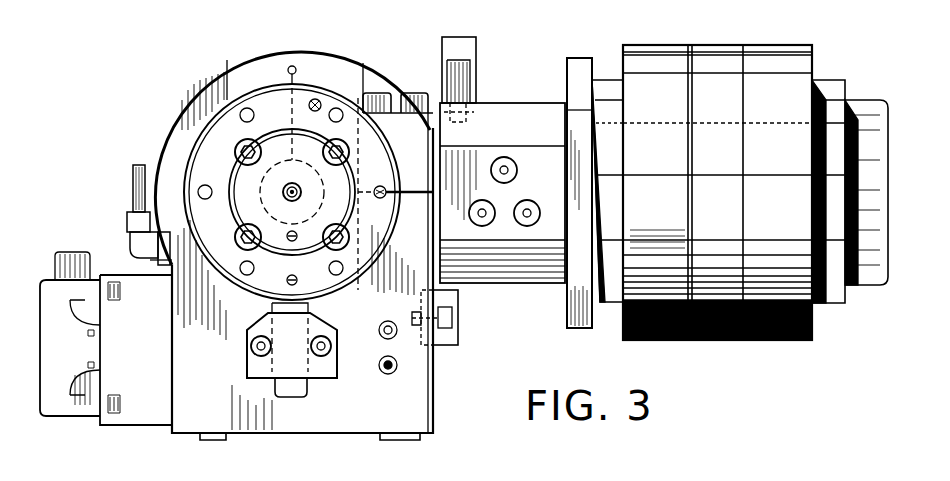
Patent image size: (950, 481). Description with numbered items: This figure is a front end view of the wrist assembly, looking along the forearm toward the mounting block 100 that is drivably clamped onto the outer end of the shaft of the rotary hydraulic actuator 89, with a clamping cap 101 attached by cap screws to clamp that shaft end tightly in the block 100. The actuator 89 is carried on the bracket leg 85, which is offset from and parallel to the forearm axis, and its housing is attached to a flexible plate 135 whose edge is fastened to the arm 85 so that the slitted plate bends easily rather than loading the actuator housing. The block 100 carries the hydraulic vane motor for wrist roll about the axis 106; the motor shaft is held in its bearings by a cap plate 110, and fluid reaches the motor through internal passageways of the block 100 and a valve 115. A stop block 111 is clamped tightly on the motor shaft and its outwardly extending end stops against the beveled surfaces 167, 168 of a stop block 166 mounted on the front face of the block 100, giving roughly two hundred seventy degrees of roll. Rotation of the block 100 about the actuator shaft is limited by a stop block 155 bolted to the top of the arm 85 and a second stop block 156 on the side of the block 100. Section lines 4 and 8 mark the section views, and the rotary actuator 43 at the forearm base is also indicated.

The mounting block 100 is at (281, 433).
The clamping cap 101 is at (403, 143).
The axis of shaft 104 106 is at (282, 192).
The cap plate 110 is at (366, 233).
The stop block 111 is at (222, 82).
The valve 115 is at (112, 282).
The plate 135 is at (575, 300).
The stop block 155 is at (478, 53).
The second stop block 156 is at (458, 337).
The stop block 166 is at (317, 372).
The beveled surface 167 is at (322, 320).
The beveled surface 168 is at (262, 320).
The bracket leg 85 is at (512, 118).
The rotary hydraulic actuator 89 is at (698, 47).
The rotary hydraulic actuator 43 is at (758, 479).
The section line 4- 4 is at (437, 22).
The section line 8- 8 is at (575, 34).